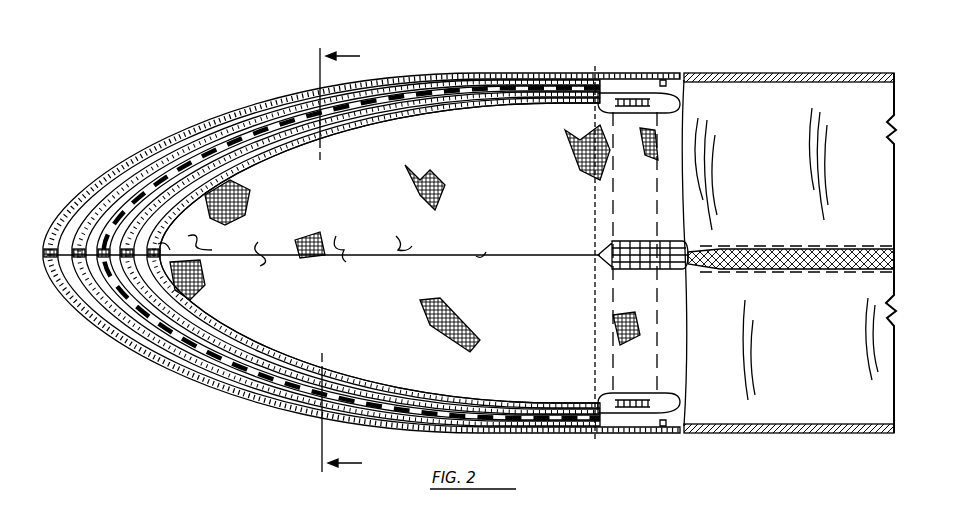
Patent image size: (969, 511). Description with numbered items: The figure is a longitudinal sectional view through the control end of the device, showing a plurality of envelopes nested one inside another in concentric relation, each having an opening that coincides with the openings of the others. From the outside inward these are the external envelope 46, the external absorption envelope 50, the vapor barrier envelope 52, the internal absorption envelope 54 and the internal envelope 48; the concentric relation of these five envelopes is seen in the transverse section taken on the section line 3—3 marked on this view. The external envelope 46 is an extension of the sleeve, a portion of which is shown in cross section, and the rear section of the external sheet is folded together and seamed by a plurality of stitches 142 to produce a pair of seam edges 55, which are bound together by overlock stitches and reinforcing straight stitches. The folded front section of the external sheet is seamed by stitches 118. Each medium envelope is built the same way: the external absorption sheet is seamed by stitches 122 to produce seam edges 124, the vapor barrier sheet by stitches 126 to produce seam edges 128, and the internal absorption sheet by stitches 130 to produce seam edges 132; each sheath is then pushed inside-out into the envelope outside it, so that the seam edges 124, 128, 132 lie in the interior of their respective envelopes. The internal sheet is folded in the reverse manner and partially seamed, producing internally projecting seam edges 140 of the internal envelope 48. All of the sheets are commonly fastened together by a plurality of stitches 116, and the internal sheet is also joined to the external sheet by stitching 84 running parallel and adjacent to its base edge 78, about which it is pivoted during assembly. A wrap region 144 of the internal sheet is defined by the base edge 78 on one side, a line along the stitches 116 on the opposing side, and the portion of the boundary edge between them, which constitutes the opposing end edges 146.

The section line 3— 3 is at (348, 261).
The external envelope 46 is at (95, 180).
The internal envelope 48 is at (242, 172).
The external absorption envelope 50 is at (112, 170).
The vapor barrier envelope 52 is at (135, 150).
The internal absorption envelope 54 is at (270, 158).
The seam edges 55 is at (846, 271).
The base edge 78 is at (662, 80).
The stitching 84 is at (676, 428).
The stitches 116 is at (594, 204).
The stitches 118 is at (60, 265).
The stitches 122 is at (82, 266).
The seam edges 124 is at (103, 266).
The stitches 126 is at (125, 266).
The seam edges 128 is at (150, 266).
The stitches 130 is at (162, 268).
The seam edges 132 is at (158, 165).
The seam edges 140 is at (200, 312).
The stitches 142 is at (780, 249).
The wrap region 144 is at (648, 365).
The end edges 146 is at (692, 266).